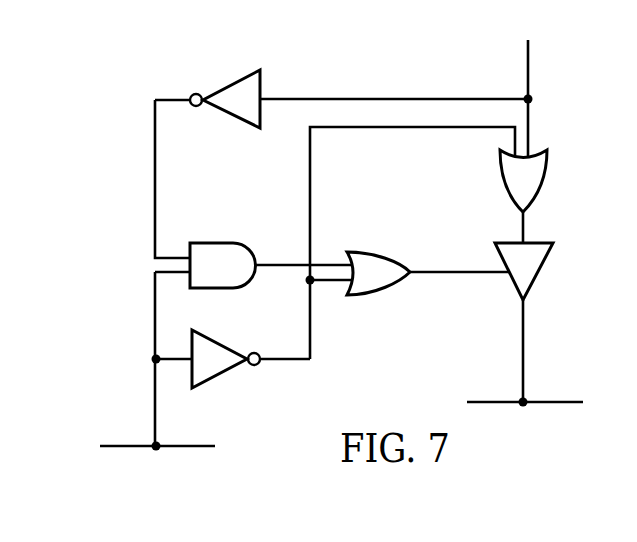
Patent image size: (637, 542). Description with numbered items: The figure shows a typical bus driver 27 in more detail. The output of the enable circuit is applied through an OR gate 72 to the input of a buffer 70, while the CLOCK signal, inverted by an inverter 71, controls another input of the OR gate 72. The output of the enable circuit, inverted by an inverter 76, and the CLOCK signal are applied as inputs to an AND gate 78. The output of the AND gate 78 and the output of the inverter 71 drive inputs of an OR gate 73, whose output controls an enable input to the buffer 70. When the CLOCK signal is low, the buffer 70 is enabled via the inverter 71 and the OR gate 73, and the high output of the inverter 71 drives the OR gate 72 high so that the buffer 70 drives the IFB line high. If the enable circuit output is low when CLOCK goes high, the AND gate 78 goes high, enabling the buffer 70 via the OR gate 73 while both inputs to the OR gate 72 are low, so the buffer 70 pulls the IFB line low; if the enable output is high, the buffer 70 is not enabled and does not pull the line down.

The bus driver 27 is at (120, 150).
The buffer 70 is at (545, 258).
The inverter 71 is at (212, 382).
The OR gate 72 is at (546, 170).
The OR gate 73 is at (408, 263).
The inverter 76 is at (264, 88).
The AND gate 78 is at (254, 252).